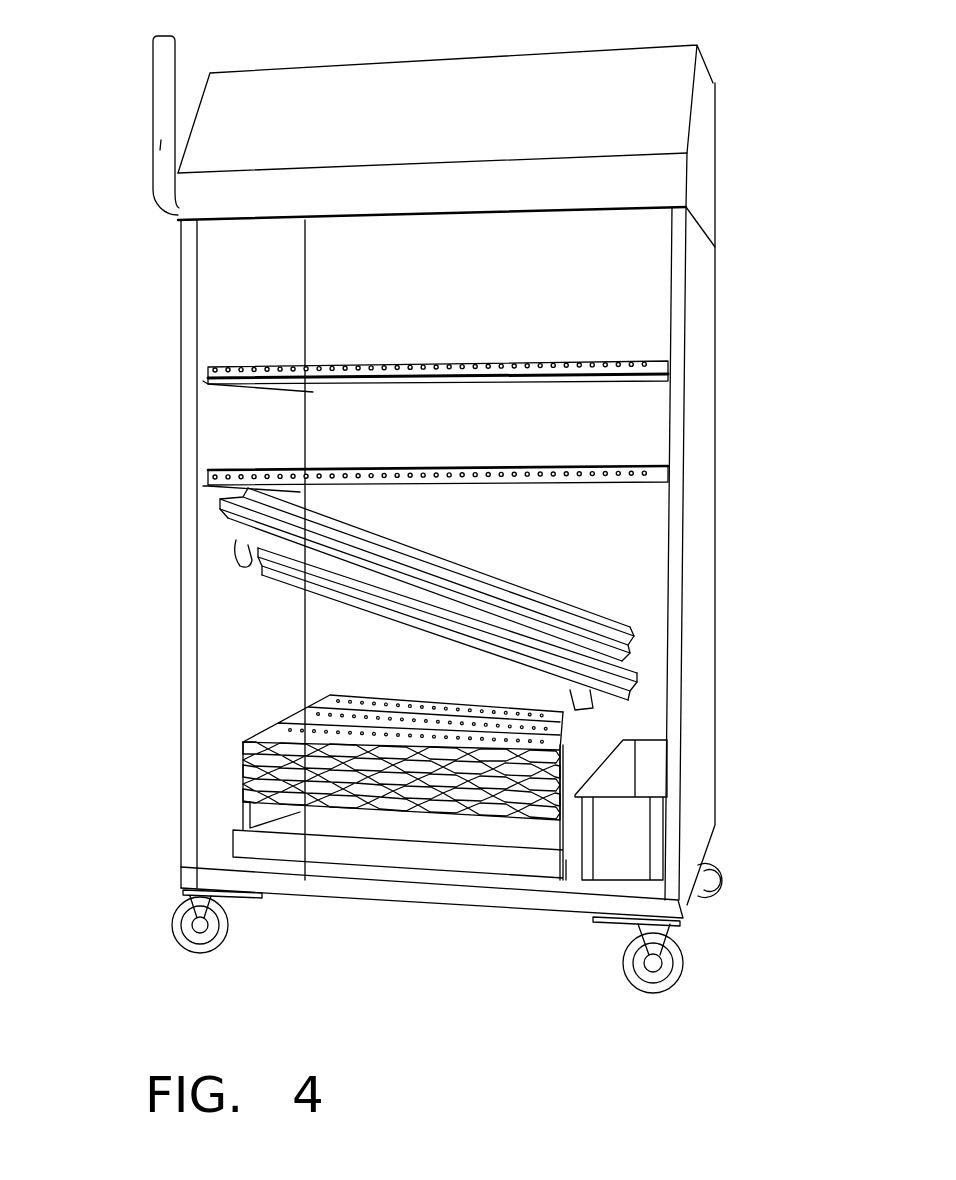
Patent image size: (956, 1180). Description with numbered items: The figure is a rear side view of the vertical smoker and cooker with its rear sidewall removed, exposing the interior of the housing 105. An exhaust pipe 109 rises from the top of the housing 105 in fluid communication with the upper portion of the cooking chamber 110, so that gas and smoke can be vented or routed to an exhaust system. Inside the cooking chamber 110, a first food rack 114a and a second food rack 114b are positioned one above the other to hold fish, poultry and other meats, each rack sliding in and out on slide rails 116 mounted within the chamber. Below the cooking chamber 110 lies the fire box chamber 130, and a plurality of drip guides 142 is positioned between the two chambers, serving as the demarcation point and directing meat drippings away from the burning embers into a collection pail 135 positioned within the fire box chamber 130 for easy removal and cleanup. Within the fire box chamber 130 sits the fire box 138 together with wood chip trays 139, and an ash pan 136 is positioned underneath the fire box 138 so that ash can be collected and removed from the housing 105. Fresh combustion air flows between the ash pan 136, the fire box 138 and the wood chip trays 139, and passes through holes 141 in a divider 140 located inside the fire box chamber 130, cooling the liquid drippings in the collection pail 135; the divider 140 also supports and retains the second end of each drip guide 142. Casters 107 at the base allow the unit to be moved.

The housing 105 is at (708, 178).
The casters 107 is at (178, 935).
The exhaust pipe 109 is at (162, 150).
The cooking chamber 110 is at (638, 298).
The first food rack 114a is at (668, 493).
The second food rack 114b is at (668, 385).
The slide rails 116 is at (200, 383).
The fire box chamber 130 is at (242, 697).
The collection pail 135 is at (637, 828).
The ash pan 136 is at (245, 843).
The fire box 138 is at (246, 774).
The wood chip trays 139 is at (417, 697).
The divider 140 is at (567, 850).
The holes 141 is at (563, 837).
The drip guides 142 is at (243, 507).